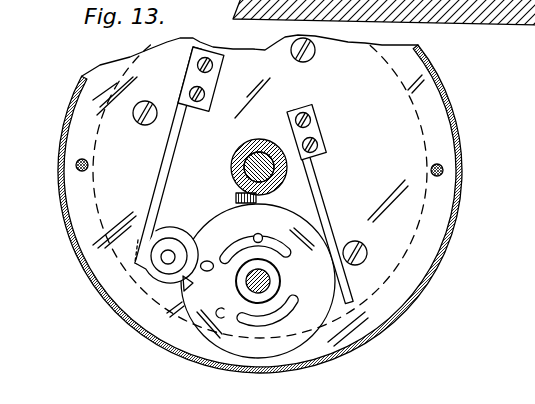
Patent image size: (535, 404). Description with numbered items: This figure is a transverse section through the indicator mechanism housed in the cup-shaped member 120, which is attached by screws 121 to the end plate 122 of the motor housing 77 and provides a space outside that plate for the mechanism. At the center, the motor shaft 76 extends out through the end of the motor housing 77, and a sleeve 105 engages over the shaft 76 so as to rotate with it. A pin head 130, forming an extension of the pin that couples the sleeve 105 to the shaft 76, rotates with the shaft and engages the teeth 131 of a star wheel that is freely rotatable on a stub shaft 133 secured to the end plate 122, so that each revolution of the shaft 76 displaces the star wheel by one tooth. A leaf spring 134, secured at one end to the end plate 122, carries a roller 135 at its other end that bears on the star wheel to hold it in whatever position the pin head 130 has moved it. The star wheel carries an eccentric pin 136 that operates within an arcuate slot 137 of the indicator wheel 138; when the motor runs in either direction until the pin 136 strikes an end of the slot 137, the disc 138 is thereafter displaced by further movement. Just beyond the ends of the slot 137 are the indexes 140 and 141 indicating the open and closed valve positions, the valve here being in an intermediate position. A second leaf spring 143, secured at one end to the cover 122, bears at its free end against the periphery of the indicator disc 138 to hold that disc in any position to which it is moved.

The motor shaft 76 is at (258, 151).
The motor housing 77 is at (408, 100).
The sleeve 105 is at (240, 175).
The cup-shaped member 120 is at (458, 192).
The screws 121 is at (76, 165).
The end plate 122 is at (438, 127).
The pin head 130 is at (236, 198).
The teeth 131 is at (181, 287).
The stub shaft 133 is at (271, 281).
The leaf spring 134 is at (164, 153).
The roller 135 is at (157, 283).
The eccentric pin 136 is at (260, 235).
The arcuate slot 137 is at (291, 251).
The indicator wheel 138 is at (302, 223).
The index 140 is at (210, 261).
The index 141 is at (222, 308).
The leaf spring 143 is at (313, 186).